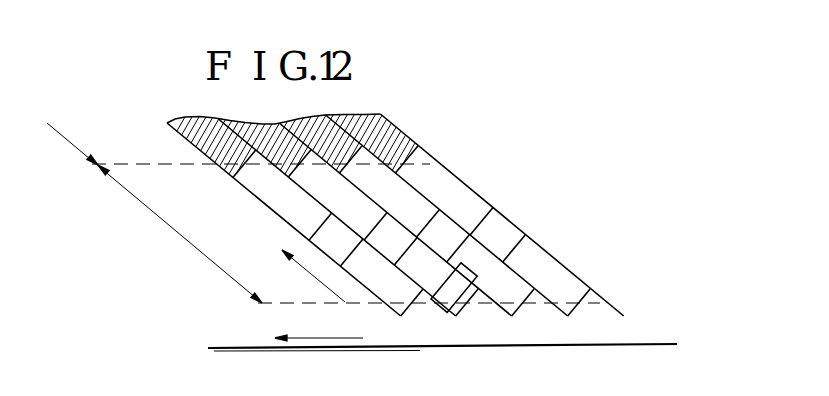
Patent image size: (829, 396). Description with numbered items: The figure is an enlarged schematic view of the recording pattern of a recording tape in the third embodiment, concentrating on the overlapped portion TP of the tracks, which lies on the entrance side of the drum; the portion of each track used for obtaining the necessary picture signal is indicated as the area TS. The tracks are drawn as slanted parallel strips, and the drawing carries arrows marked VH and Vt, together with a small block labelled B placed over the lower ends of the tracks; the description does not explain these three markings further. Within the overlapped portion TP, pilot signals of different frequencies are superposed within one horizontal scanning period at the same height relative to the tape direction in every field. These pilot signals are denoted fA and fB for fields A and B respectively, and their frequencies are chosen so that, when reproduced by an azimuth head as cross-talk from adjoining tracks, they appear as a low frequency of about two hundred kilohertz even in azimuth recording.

The picture signal area TS is at (238, 210).
The overlapped portion TP is at (349, 234).
The head scanning velocity VH is at (313, 276).
The tape transport velocity Vt is at (319, 324).
The pilot signal for field A fA is at (389, 238).
The pilot signal for field B fB is at (444, 236).
The magnetic head B is at (435, 304).